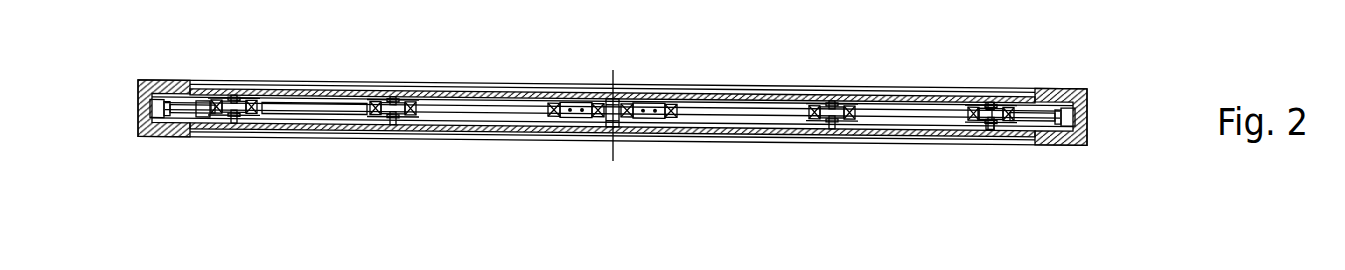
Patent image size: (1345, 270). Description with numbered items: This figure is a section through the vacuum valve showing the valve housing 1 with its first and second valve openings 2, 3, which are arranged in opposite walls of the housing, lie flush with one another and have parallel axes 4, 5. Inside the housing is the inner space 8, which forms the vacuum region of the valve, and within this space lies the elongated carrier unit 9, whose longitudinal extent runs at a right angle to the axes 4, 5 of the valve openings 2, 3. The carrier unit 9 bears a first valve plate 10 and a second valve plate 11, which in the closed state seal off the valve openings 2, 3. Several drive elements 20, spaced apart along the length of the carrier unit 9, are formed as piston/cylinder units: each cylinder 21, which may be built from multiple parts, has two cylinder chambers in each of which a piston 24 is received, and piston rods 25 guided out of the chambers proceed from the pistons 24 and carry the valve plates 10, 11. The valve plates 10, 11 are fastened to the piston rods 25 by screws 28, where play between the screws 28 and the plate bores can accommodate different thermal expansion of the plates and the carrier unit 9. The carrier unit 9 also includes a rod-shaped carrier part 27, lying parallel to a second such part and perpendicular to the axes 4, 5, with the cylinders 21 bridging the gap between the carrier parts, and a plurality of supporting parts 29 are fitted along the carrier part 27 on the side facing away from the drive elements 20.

The valve housing 1 is at (1053, 148).
The first valve opening 2 is at (790, 96).
The second valve opening 3 is at (806, 141).
The axis 4 is at (651, 71).
The axis 5 is at (609, 160).
The inner space 8 is at (152, 126).
The carrier unit 9 is at (1050, 110).
The first valve plate 10 is at (437, 92).
The second valve plate 11 is at (446, 131).
The drive element 20 is at (246, 100).
The cylinder 21 is at (208, 117).
The piston 24 is at (982, 128).
The piston rod 25 is at (990, 108).
The second rod-shaped carrier part 27 is at (317, 111).
The screw 28 is at (992, 133).
The supporting part 29 is at (181, 6).